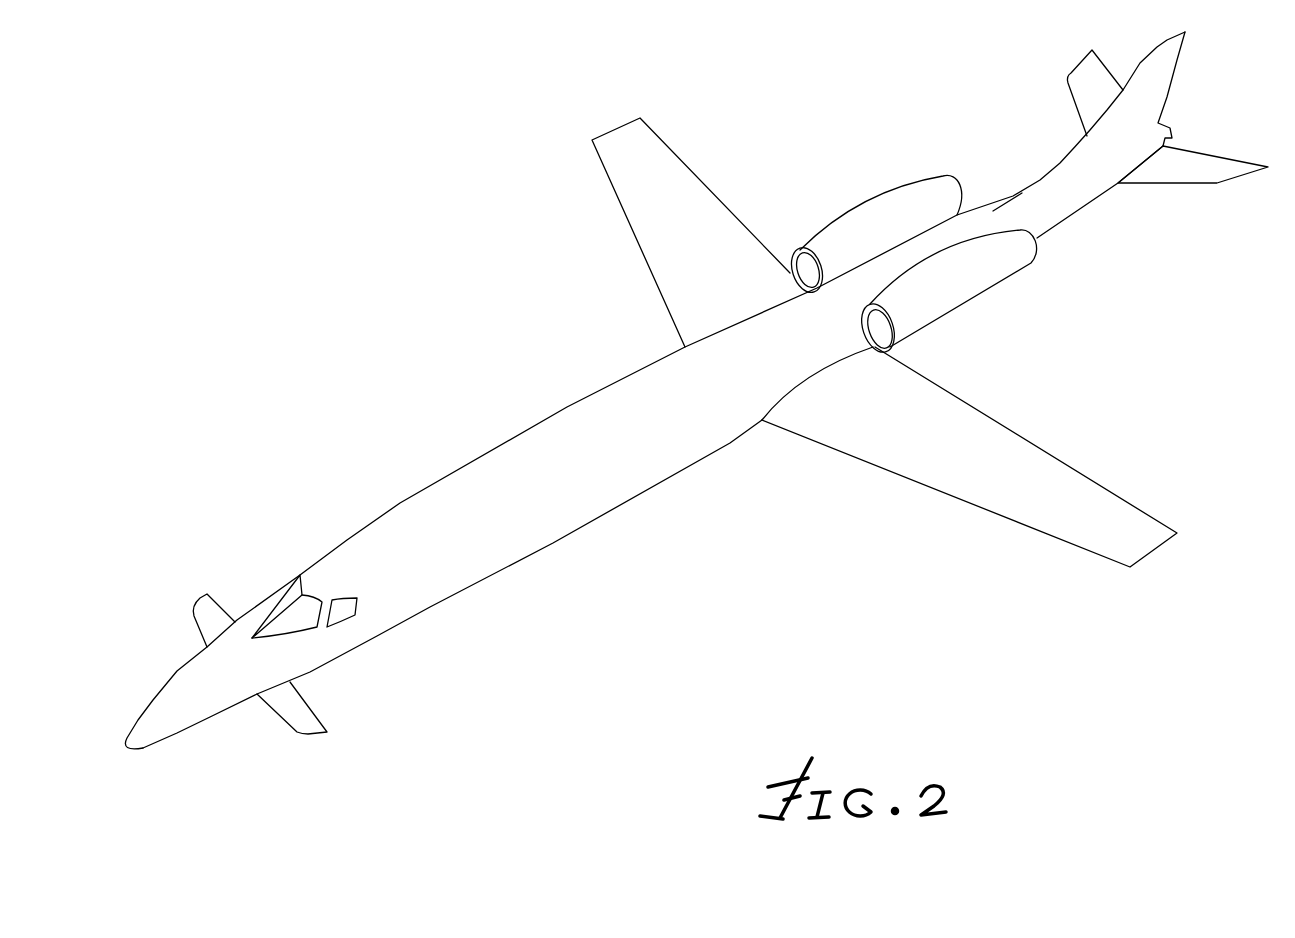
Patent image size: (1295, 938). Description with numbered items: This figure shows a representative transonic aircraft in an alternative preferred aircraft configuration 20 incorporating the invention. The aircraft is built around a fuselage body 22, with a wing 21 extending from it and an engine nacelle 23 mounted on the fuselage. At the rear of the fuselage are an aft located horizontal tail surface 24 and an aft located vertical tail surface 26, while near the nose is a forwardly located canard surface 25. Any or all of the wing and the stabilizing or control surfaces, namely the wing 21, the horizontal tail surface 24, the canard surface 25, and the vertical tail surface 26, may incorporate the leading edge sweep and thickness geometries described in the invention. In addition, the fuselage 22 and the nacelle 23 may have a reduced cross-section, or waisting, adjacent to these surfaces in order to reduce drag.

The aircraft configuration 20 is at (549, 551).
The wing 21 is at (886, 478).
The fuselage body 22 is at (565, 405).
The engine nacelle 23 is at (974, 316).
The aft located horizontal tail surface 24 is at (1215, 187).
The forwardly located canard surface 25 is at (311, 703).
The aft located vertical tail surface 26 is at (1182, 61).